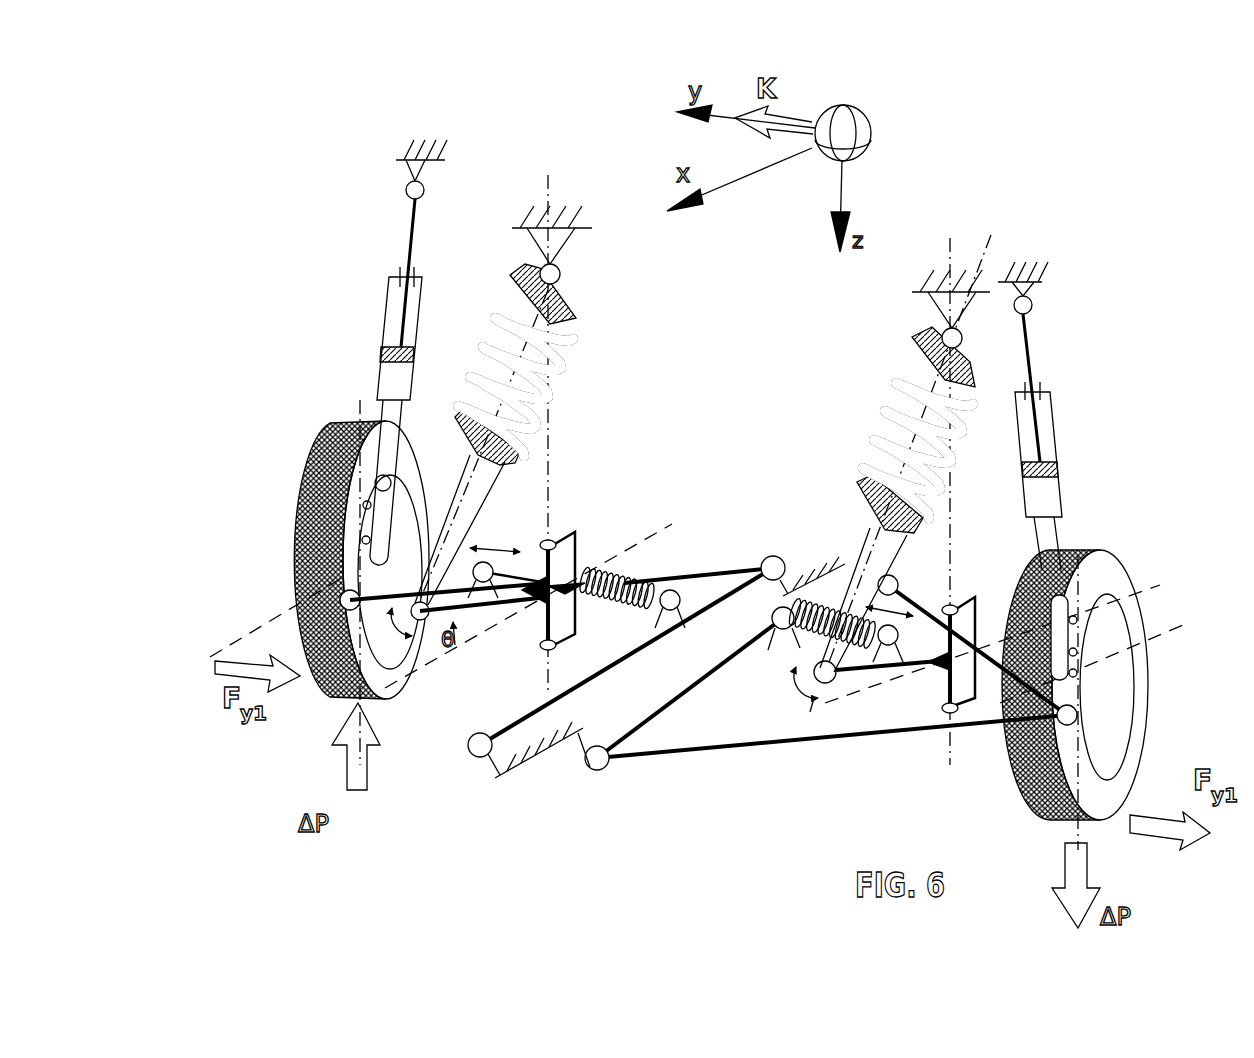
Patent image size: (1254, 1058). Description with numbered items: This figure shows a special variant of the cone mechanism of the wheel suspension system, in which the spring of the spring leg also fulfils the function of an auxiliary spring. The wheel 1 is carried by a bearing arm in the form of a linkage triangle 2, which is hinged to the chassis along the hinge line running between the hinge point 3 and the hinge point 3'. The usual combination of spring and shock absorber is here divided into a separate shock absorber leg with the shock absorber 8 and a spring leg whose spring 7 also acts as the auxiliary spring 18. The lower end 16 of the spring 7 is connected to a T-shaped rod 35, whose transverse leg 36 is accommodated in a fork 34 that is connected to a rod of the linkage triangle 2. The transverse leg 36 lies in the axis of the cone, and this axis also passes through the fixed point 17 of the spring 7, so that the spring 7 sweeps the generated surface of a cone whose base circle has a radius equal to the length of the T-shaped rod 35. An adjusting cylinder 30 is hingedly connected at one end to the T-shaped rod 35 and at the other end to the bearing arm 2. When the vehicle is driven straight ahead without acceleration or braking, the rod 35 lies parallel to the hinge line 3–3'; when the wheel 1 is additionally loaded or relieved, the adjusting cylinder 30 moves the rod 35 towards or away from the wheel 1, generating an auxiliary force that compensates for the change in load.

The wheel 1 is at (1130, 600).
The linkage triangle 2 is at (765, 752).
The hinge point 3 is at (538, 778).
The hinge point 3' is at (972, 633).
The spring 7 is at (889, 401).
The auxiliary spring 18 is at (863, 600).
The shock absorber 8 is at (1055, 430).
The lower end 16 is at (822, 685).
The fixed point 17 is at (945, 332).
The adjusting cylinder 30 is at (810, 652).
The fork 34 is at (987, 600).
The T-shaped rod 35 is at (884, 668).
The transverse leg 36 is at (962, 690).